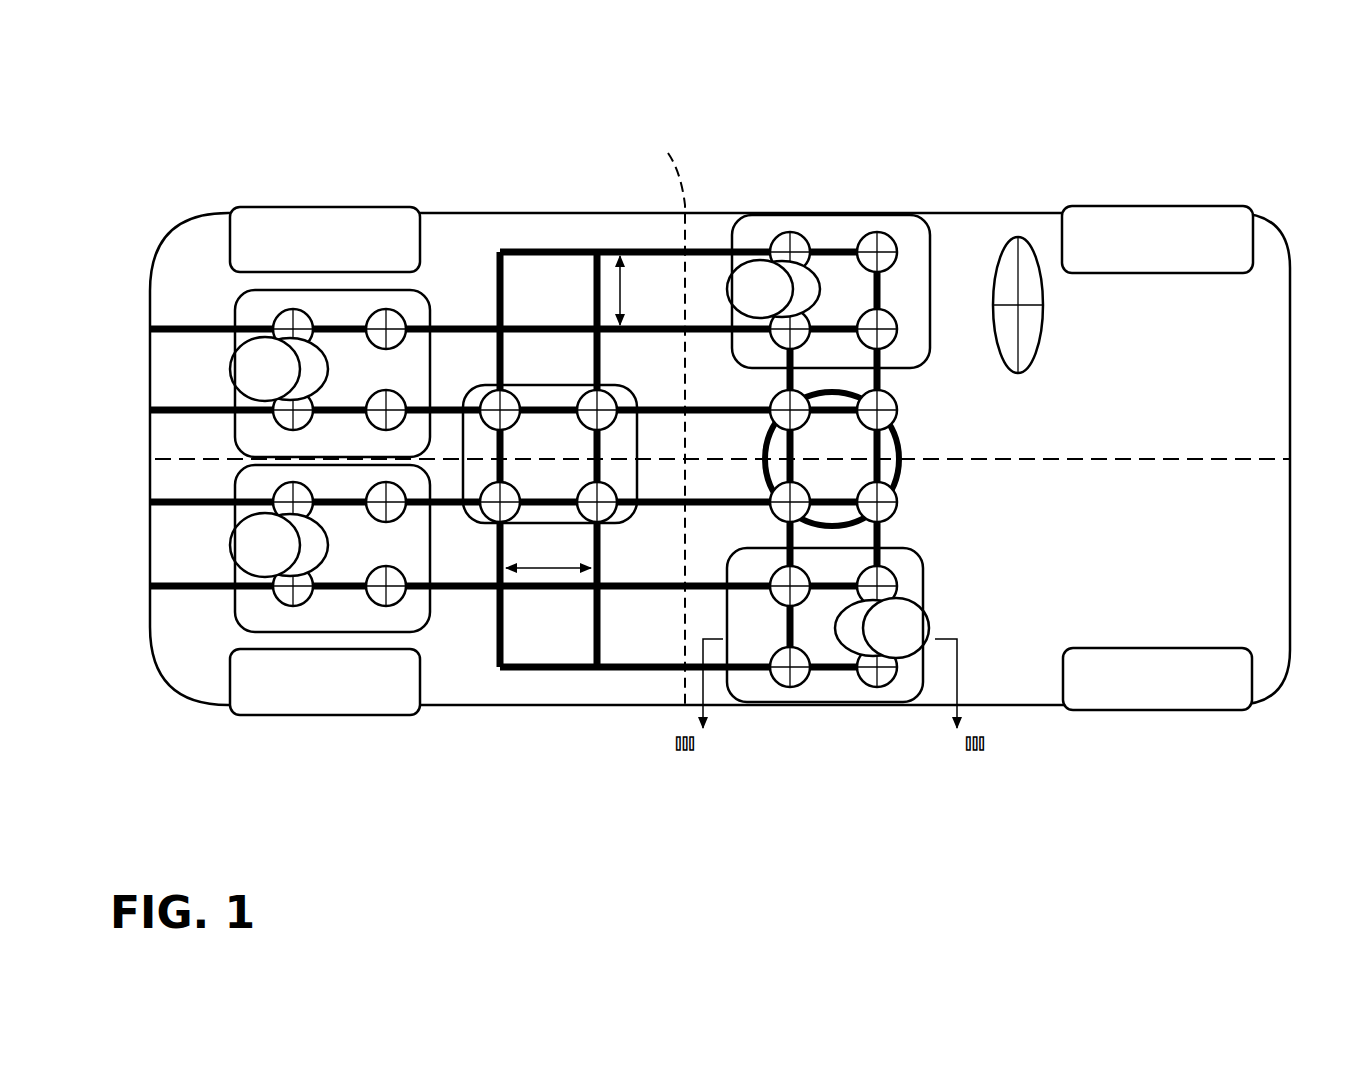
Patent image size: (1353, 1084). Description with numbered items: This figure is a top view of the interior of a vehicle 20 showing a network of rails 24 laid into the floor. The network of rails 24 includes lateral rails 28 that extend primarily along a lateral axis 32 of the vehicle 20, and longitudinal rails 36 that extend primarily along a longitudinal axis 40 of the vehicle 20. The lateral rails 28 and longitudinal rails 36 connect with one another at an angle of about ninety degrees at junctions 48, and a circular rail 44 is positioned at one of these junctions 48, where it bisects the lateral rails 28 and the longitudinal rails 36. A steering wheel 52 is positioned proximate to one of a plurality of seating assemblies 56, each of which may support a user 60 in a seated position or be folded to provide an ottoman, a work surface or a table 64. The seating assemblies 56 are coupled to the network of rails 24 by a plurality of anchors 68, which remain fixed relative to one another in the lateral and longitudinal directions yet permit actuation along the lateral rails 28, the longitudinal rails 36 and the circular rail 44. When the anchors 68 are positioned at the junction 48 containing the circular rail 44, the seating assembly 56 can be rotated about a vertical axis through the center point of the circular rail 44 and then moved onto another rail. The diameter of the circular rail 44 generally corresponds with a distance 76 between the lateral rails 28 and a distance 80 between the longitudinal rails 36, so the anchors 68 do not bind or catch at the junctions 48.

The vehicle 20 is at (183, 156).
The network of rails 24 is at (452, 320).
The lateral rails 28 is at (503, 641).
The lateral axis 32 is at (671, 415).
The longitudinal rails 36 is at (197, 330).
The longitudinal axis 40 is at (1235, 459).
The circular rail 44 is at (906, 440).
The junction 48 is at (850, 470).
The steering wheel 52 is at (1035, 246).
The seating assemblies 56 is at (364, 288).
The user 60 is at (262, 357).
The table 64 is at (520, 386).
The anchors 68 is at (368, 395).
The distance between the lateral rails 76 is at (537, 572).
The distance between the longitudinal rails 80 is at (623, 290).